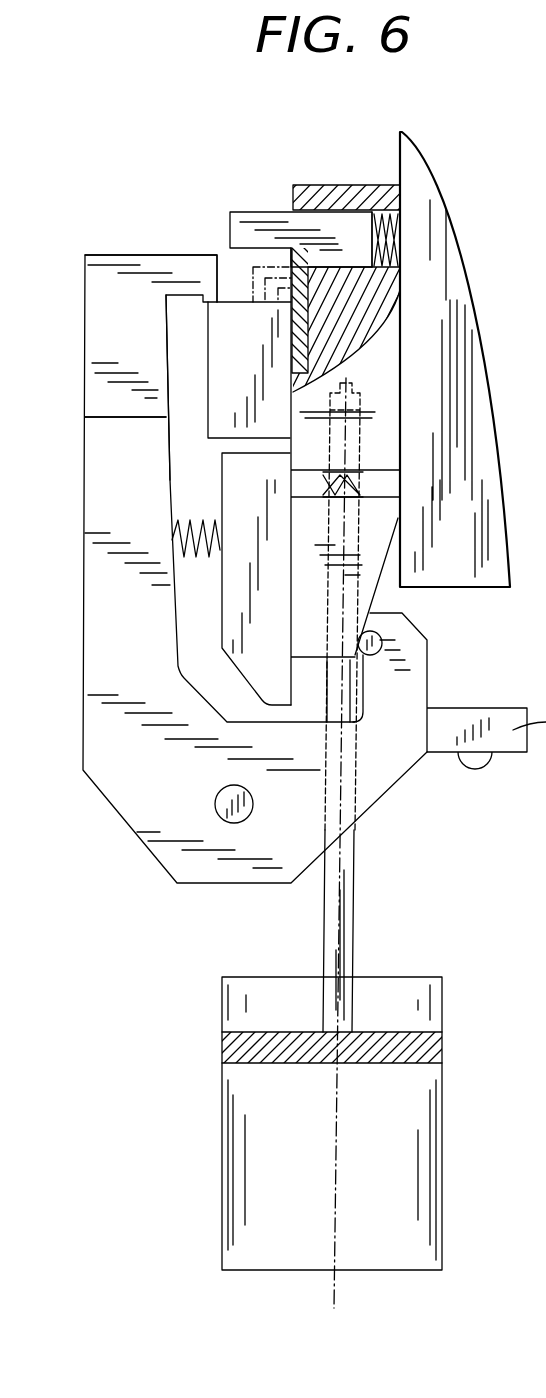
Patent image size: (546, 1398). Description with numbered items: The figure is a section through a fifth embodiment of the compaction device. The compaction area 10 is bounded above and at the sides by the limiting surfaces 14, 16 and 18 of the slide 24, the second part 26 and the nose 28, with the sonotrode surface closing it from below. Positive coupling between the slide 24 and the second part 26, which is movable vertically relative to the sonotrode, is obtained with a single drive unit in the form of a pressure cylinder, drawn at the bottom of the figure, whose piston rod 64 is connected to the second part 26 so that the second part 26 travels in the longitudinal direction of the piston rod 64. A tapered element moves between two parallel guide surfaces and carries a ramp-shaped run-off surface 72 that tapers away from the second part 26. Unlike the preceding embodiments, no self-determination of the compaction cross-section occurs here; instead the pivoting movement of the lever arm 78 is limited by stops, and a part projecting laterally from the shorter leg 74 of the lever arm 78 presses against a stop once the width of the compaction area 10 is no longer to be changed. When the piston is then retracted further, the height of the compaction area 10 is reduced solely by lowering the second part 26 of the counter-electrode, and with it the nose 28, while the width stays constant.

The compaction area 10 is at (258, 262).
The limiting surface 14 is at (223, 277).
The limiting surface 16 is at (287, 273).
The limiting surface 18 is at (252, 250).
The slide 24 is at (177, 270).
The second part 26 is at (370, 390).
The nose 28 is at (335, 228).
The piston rod 64 is at (338, 914).
The run-off surface 72 is at (377, 595).
The shorter leg 74 is at (417, 662).
The lever arm 78 is at (117, 662).